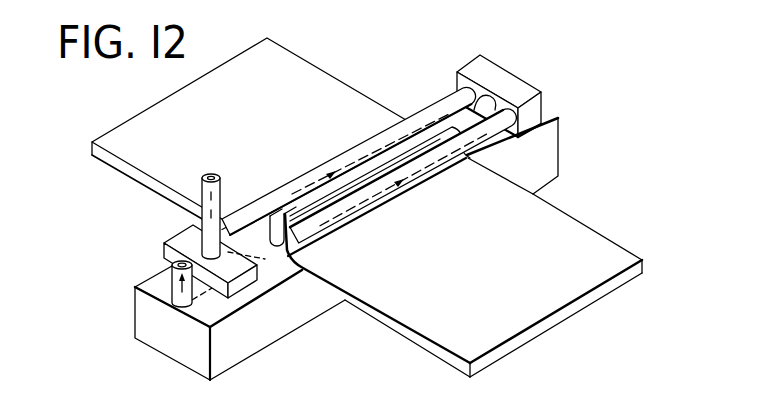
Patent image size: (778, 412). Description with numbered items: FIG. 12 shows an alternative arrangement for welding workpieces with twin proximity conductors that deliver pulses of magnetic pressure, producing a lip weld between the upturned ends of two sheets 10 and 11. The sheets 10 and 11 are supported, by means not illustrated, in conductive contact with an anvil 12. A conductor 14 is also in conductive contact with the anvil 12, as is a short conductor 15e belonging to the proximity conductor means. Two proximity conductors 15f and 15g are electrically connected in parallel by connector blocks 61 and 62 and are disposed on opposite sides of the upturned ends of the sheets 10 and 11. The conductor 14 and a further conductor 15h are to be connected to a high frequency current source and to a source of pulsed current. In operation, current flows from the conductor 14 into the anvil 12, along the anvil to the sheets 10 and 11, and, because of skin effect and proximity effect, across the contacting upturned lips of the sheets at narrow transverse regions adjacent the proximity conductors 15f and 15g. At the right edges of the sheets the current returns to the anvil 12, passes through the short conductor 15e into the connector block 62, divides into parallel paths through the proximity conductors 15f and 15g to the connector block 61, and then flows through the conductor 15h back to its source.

The sheet 10 is at (585, 239).
The sheet 11 is at (315, 77).
The anvil 12 is at (247, 352).
The conductor 14 is at (170, 273).
The short conductor 15e is at (478, 106).
The proximity conductor 15f is at (348, 158).
The proximity conductor 15g is at (408, 183).
The conductor 15h is at (220, 191).
The connector block 61 is at (183, 238).
The connector block 62 is at (531, 95).